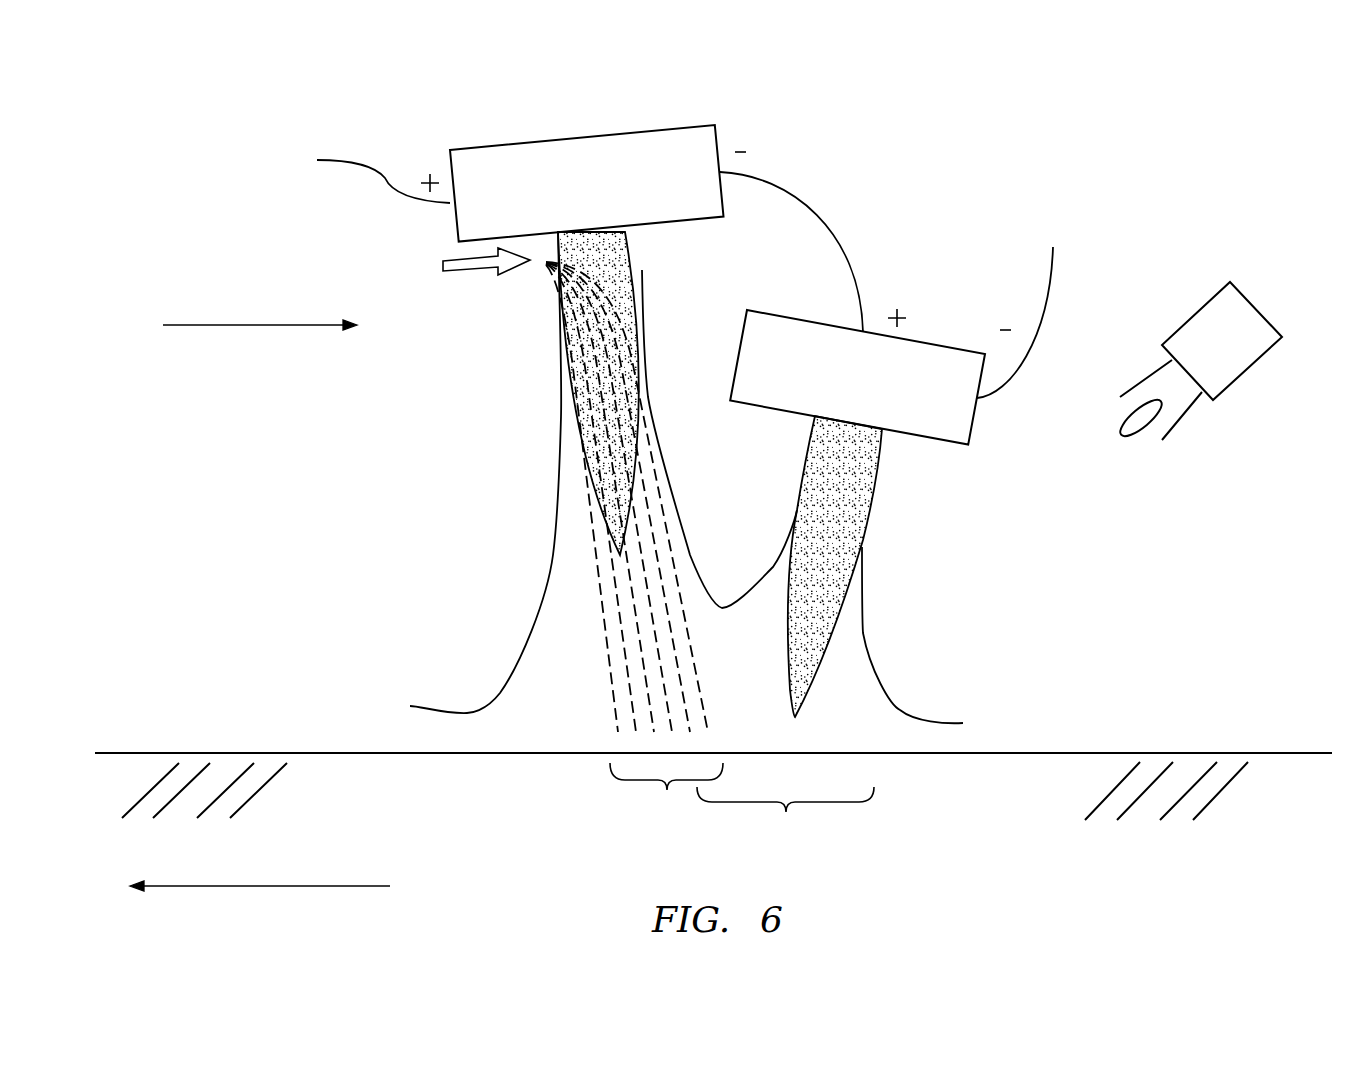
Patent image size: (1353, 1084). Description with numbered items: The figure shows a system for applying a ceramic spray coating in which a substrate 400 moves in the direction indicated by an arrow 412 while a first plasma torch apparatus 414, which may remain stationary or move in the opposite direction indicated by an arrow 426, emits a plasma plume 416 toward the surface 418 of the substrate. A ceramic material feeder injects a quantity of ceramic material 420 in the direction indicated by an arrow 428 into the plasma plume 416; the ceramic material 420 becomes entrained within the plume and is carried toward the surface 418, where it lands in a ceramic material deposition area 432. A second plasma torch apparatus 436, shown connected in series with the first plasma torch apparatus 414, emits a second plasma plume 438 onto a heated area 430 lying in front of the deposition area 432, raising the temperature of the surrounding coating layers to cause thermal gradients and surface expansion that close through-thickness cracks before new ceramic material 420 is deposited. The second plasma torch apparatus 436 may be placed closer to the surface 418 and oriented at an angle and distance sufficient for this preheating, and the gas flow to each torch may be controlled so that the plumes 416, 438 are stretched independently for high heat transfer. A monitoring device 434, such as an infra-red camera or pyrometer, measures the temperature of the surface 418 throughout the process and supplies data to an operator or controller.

The substrate 400 is at (1015, 841).
The arrow 412 is at (340, 886).
The first plasma torch apparatus 414 is at (526, 140).
The plasma plume 416 is at (573, 385).
The surface 418 is at (1042, 752).
The ceramic material 420 is at (542, 270).
The arrow 426 is at (241, 325).
The arrow 428 is at (440, 262).
The heated area 430 is at (785, 817).
The ceramic material deposition area 432 is at (666, 793).
The monitoring device 434 is at (1230, 365).
The second plasma torch apparatus 436 is at (970, 433).
The second plasma plume 438 is at (850, 593).